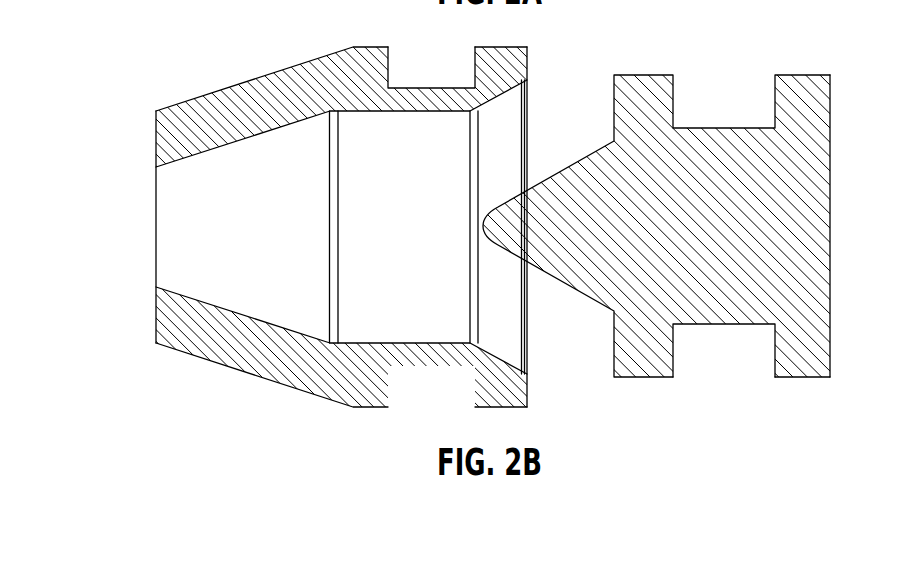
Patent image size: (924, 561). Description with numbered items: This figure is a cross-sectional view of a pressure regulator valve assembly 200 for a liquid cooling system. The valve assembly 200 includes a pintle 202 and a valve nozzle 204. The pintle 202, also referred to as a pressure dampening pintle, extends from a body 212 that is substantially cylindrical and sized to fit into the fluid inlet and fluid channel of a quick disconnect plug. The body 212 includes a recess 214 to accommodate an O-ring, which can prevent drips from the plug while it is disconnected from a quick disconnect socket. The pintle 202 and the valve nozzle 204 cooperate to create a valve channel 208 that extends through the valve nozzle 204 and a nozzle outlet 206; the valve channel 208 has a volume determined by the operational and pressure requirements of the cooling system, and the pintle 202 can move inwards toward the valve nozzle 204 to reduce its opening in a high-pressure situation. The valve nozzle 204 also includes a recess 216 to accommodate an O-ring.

The pressure regulator valve assembly 200 is at (462, 280).
The pintle 202 is at (512, 280).
The valve nozzle 204 is at (462, 280).
The nozzle outlet 206 is at (156, 225).
The valve channel 208 is at (539, 103).
The body 212 is at (830, 223).
The recess 214 is at (719, 334).
The recess 216 is at (432, 80).